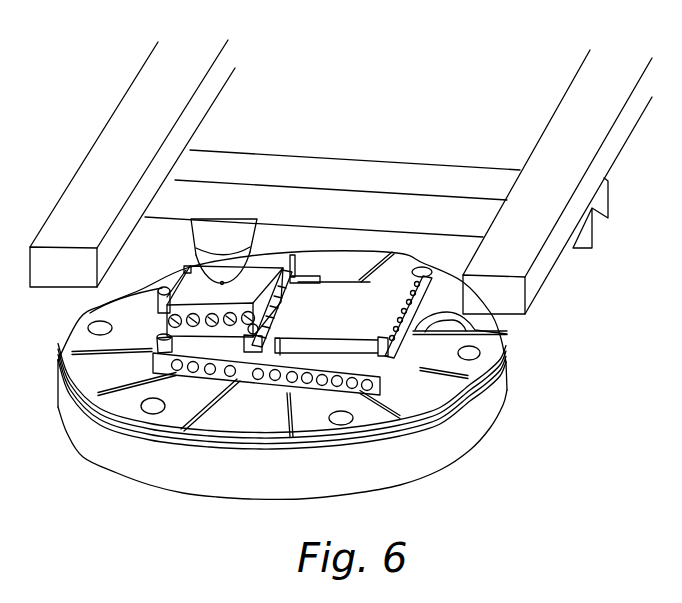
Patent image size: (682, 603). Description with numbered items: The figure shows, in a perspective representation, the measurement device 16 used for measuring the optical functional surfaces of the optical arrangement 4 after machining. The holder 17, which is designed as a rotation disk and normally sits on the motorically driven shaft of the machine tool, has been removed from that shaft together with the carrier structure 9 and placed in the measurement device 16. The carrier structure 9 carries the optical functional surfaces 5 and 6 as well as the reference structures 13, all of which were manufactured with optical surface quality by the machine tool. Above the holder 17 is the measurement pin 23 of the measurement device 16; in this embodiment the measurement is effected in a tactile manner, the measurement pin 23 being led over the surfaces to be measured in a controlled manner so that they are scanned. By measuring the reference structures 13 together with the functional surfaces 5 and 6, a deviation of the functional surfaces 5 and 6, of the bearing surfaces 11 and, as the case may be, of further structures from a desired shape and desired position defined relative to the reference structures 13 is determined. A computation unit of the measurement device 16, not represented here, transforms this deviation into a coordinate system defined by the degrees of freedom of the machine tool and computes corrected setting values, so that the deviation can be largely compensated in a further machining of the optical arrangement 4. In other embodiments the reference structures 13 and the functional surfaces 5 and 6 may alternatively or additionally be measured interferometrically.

The measuring device 16 is at (352, 51).
The holder 17 is at (498, 383).
The functional surface 6 is at (108, 309).
The bearing surfaces 11 is at (421, 372).
The functional surface 5 is at (343, 300).
The carrier structure 9 is at (248, 369).
The reference structures 13 is at (312, 276).
The optical arrangement 4 is at (507, 333).
The measurement pin 23 is at (198, 264).